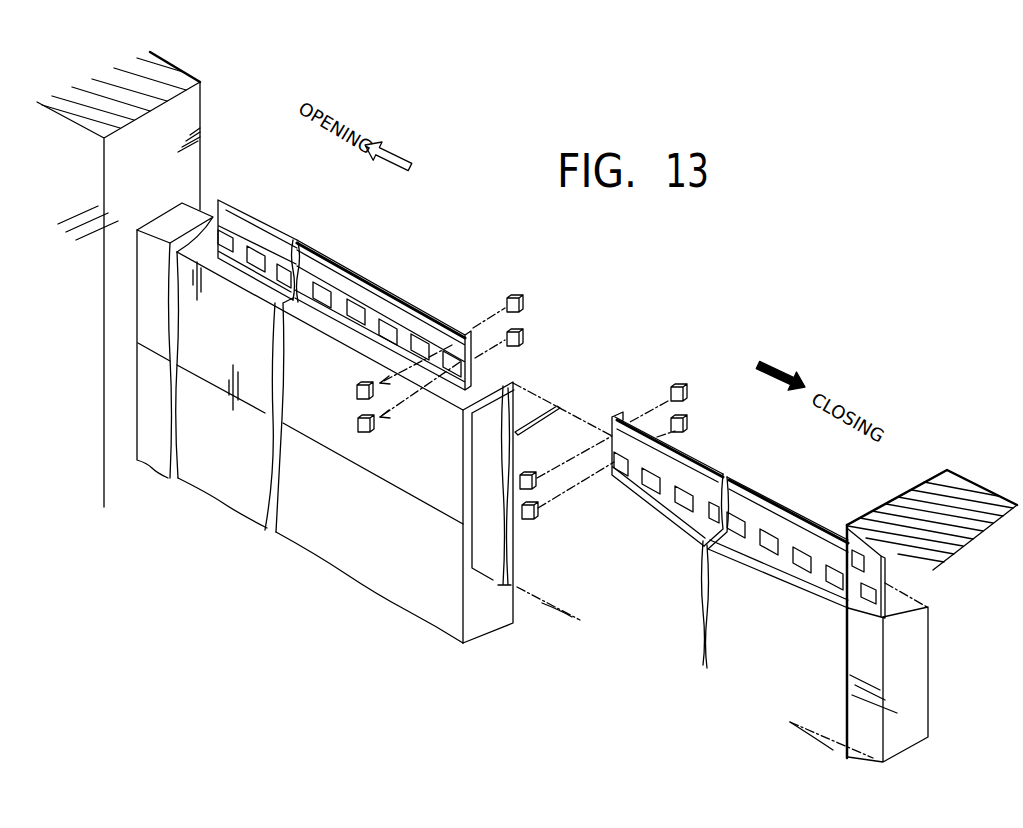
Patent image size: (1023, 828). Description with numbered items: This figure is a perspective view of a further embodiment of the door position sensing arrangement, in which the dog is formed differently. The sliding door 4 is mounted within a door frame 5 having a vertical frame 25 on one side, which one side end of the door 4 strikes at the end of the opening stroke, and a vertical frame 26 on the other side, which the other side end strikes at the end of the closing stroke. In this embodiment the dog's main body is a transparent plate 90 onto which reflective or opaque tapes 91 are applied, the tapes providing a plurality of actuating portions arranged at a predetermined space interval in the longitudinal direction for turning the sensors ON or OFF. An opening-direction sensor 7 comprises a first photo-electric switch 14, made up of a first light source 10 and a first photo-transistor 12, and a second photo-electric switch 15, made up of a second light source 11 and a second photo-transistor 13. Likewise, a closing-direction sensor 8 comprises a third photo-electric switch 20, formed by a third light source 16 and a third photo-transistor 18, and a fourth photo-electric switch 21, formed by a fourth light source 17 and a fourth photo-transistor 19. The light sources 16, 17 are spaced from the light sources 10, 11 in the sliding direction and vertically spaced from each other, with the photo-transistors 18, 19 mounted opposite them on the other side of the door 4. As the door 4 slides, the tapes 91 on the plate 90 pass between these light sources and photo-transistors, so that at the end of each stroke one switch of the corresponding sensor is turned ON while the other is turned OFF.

The door 4 is at (325, 433).
The door frame 5 is at (977, 497).
The opening-direction sensor 7 is at (536, 297).
The closing-direction sensor 8 is at (678, 389).
The first light source 10 is at (523, 305).
The second light source 11 is at (523, 339).
The first photo-transistor 12 is at (356, 394).
The second photo-transistor 13 is at (372, 430).
The first photo-electric switch 14 is at (493, 320).
The second photo-electric switch 15 is at (513, 363).
The third light source 16 is at (689, 394).
The fourth light source 17 is at (687, 422).
The third photo-transistor 18 is at (527, 472).
The fourth photo-transistor 19 is at (530, 522).
The third photo-electric switch 20 is at (657, 403).
The fourth photo-electric switch 21 is at (692, 441).
The vertical frame 25 is at (200, 118).
The vertical frame 26 is at (907, 497).
The transparent plate 90 is at (344, 295).
The reflective or opaque tapes 91 is at (313, 257).